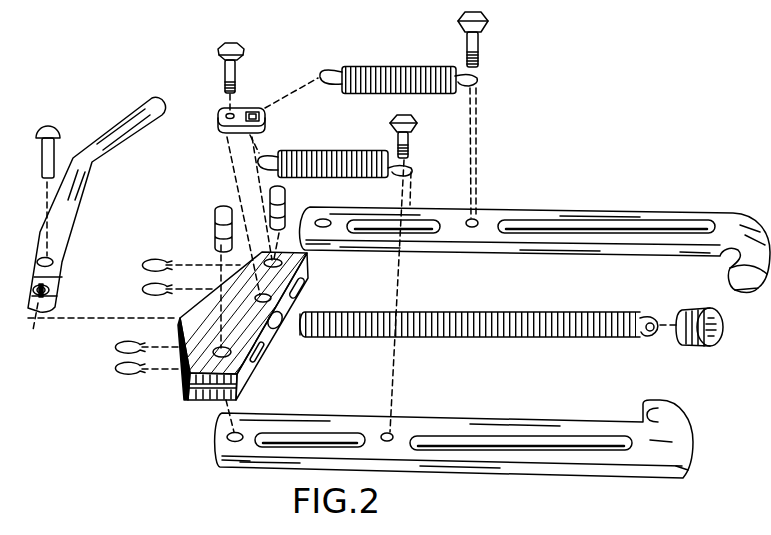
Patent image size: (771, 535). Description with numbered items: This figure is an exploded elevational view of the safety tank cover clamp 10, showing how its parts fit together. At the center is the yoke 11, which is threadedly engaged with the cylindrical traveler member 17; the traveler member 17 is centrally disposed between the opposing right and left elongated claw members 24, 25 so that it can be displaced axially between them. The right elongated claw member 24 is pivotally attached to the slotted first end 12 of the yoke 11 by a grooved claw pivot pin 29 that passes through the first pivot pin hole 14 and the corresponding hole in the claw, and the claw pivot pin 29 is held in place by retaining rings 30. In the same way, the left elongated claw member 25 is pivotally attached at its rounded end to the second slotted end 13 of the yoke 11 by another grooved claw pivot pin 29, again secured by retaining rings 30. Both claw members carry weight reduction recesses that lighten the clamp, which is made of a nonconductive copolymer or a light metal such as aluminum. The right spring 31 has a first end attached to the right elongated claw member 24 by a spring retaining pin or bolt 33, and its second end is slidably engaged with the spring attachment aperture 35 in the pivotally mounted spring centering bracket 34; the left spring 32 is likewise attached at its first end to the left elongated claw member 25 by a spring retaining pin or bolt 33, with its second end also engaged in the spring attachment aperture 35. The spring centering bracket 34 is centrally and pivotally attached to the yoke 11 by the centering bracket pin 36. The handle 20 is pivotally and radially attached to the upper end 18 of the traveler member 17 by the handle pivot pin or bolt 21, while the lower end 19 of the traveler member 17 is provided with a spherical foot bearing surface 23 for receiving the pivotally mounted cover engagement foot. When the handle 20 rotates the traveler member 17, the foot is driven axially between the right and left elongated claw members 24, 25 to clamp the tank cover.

The safety tank cover clamp 10 is at (601, 134).
The yoke 11 is at (212, 287).
The slotted first end 12 is at (300, 283).
The second slotted end 13 is at (186, 396).
The first pivot pin hole 14 is at (271, 250).
The cylindrical traveler member 17 is at (480, 337).
The upper end of traveler member 18 is at (308, 338).
The lower end of traveler member 19 is at (645, 317).
The handle 20 is at (158, 100).
The handle pivot pin or bolt 21 is at (48, 126).
The spherical foot bearing surface 23 is at (652, 336).
The right elongated claw member 24 is at (722, 226).
The left elongated claw member 25 is at (660, 462).
The claw pivot pin 29 is at (215, 216).
The retaining rings 30 is at (140, 289).
The right spring 31 is at (388, 66).
The left spring 32 is at (345, 151).
The spring retaining pin or bolt 33 is at (480, 40).
The spring centering bracket 34 is at (219, 118).
The spring attachment aperture 35 is at (263, 117).
The centering bracket pin 36 is at (240, 70).